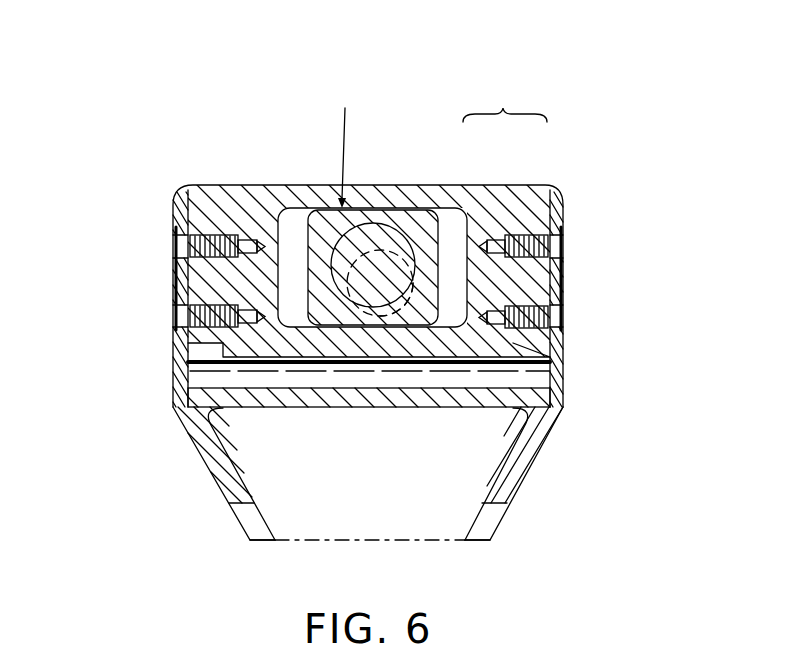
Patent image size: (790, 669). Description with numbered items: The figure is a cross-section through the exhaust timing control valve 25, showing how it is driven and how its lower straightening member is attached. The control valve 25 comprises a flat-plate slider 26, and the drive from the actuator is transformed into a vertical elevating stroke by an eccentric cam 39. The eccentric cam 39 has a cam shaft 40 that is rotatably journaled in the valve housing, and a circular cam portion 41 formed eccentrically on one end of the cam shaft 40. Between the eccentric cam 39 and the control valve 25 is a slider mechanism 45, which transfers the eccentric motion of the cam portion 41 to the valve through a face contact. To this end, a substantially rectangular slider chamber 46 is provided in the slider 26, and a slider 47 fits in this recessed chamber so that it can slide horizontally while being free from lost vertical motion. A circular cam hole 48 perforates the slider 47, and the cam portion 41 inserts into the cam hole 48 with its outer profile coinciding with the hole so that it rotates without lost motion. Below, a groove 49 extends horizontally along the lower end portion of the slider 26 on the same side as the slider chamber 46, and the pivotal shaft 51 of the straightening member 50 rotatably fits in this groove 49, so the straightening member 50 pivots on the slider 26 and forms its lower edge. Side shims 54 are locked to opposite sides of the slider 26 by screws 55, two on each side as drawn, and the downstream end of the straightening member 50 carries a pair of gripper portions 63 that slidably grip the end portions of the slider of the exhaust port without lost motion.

The exhaust timing control valve 25 is at (220, 181).
The slider 26 is at (262, 195).
The eccentric cam 39 is at (505, 100).
The cam shaft 40 is at (447, 258).
The circular cam portion 41 is at (413, 262).
The slider mechanism 45 is at (344, 143).
The slider chamber 46 is at (298, 236).
The slider 47 is at (356, 214).
The cam hole 48 is at (409, 240).
The groove 49 is at (312, 366).
The straightening member 50 is at (196, 460).
The pivotal shaft 51 is at (404, 380).
The side shims 54 is at (176, 203).
The screws 55 is at (172, 255).
The gripper portions 63 is at (250, 517).